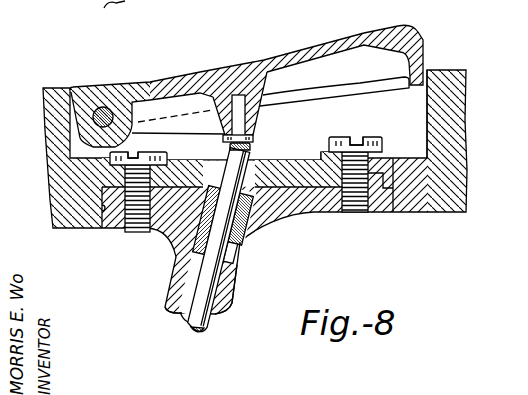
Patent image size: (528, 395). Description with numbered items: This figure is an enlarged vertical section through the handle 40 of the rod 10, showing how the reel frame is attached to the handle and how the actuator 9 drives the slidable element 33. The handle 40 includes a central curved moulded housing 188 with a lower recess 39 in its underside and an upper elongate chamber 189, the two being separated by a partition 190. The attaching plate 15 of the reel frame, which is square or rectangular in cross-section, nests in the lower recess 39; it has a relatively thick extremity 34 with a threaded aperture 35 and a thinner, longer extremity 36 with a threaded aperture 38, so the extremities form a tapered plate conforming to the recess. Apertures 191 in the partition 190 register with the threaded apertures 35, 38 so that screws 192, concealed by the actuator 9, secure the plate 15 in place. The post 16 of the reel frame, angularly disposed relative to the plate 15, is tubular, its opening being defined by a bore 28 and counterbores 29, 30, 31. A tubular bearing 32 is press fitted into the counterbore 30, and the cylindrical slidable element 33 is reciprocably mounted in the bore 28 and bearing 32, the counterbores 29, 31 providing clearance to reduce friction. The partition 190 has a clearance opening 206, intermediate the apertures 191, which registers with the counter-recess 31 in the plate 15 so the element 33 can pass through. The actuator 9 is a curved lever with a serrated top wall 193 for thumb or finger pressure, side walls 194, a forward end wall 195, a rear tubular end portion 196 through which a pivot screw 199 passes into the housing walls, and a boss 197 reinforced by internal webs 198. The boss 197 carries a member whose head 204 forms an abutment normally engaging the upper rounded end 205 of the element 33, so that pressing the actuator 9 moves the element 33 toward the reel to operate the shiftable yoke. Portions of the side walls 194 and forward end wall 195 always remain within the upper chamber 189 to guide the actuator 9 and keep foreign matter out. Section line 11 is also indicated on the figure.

The handle 40 is at (445, 64).
The upper elongate chamber 189 is at (421, 118).
The partition 190 is at (311, 167).
The lower recess 39 is at (103, 228).
The threaded aperture 35 is at (135, 222).
The thick extremity 34 is at (115, 222).
The threaded aperture 38 is at (347, 202).
The attaching plate 15 is at (391, 205).
The thinner extremity 36 is at (382, 203).
The counterbore 29 is at (220, 280).
The post 16 is at (228, 307).
The bore 28 is at (183, 323).
The counterbore 31 is at (247, 193).
The counterbore 30 is at (235, 242).
The tubular bearing 32 is at (238, 258).
The clearance opening 206 is at (227, 160).
The slidable element 33 is at (202, 327).
The housing 188 is at (62, 87).
The rear tubular end portion 196 is at (83, 107).
The screw 199 is at (95, 125).
The top wall 193 is at (328, 45).
The forward end wall 195 is at (412, 50).
The boss 197 is at (265, 103).
The head 204 is at (255, 136).
The upper rounded end 205 is at (252, 147).
The internal webs 198 is at (162, 107).
The side walls 194 is at (378, 85).
The apertures 191 is at (152, 156).
The screws 192 is at (165, 157).
The actuator 9 is at (106, 72).
The rod 10 is at (220, 38).
The section line 11- 11 is at (344, 22).